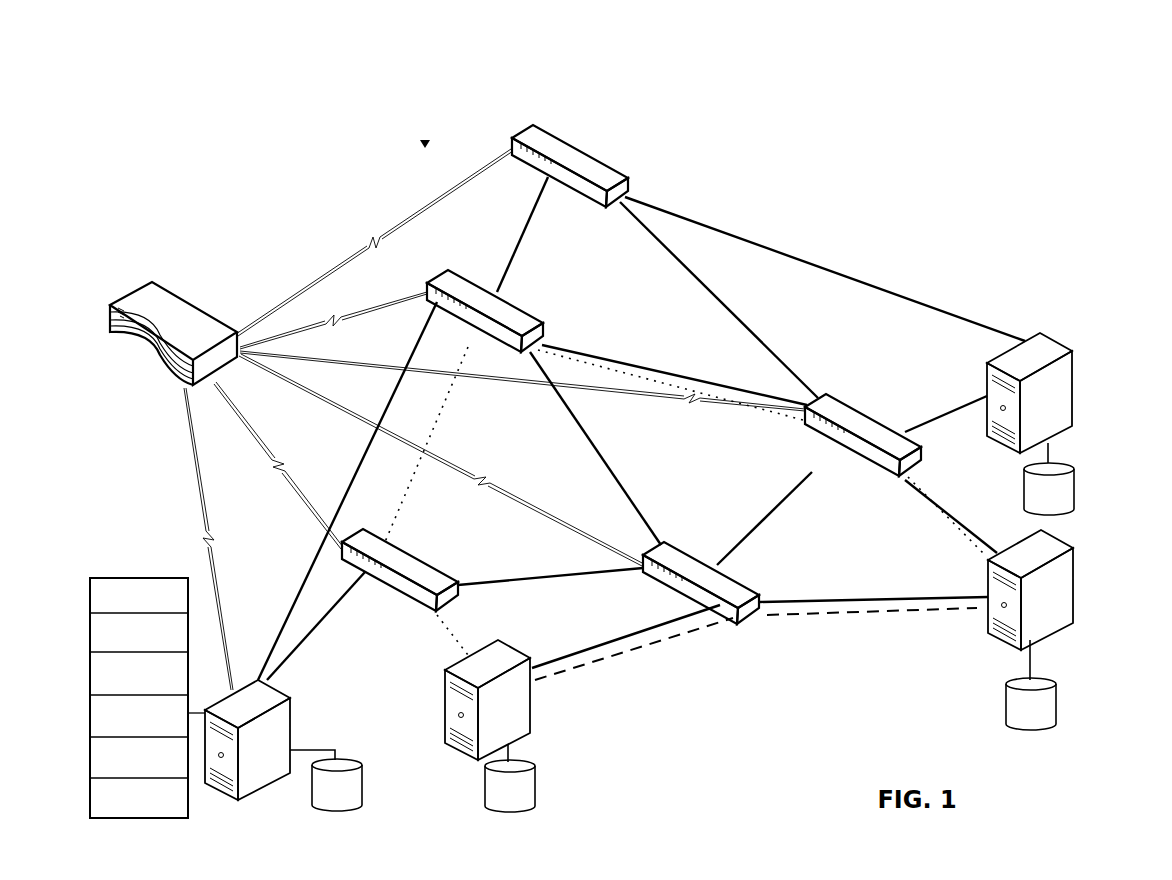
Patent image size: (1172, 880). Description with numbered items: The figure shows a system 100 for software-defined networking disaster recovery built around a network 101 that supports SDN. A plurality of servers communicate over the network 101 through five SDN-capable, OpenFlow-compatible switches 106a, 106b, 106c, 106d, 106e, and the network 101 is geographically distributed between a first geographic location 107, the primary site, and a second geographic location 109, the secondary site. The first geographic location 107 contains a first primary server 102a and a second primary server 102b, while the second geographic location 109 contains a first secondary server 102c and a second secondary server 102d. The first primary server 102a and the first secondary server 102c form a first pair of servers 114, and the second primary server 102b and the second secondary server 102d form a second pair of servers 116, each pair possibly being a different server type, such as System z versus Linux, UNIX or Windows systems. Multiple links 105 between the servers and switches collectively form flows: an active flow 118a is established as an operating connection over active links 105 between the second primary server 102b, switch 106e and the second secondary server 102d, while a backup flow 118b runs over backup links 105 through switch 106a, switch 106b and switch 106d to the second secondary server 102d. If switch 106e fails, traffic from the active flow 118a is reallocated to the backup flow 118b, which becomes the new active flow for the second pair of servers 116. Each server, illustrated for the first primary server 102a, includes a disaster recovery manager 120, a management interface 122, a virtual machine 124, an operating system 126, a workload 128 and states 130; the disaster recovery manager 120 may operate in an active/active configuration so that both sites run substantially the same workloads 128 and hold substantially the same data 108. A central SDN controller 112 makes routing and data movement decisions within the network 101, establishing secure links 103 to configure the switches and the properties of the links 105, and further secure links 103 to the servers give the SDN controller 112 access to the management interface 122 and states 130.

The system 100 is at (161, 58).
The network 101 is at (425, 140).
The secure links 103 is at (366, 242).
The links 105 is at (544, 210).
The switch 106a is at (392, 541).
The switch 106b is at (540, 318).
The switch 106c is at (626, 180).
The switch 106d is at (850, 393).
The switch 106e is at (760, 591).
The first primary server 102a is at (283, 693).
The second primary server 102b is at (538, 684).
The first secondary server 102c is at (1056, 339).
The second secondary server 102d is at (1075, 549).
The first geographic location 107 is at (645, 731).
The data 108 is at (323, 798).
The second geographic location 109 is at (1022, 292).
The SDN controller 112 is at (160, 284).
The first pair of servers 114 is at (322, 723).
The second pair of servers 116 is at (549, 727).
The active flow 118a is at (812, 617).
The backup flow 118b is at (938, 551).
The disaster recovery manager 120 is at (90, 795).
The management interface 122 is at (90, 756).
The virtual machine 124 is at (90, 705).
The operating system 126 is at (90, 670).
The workload 128 is at (90, 628).
The states 130 is at (90, 591).